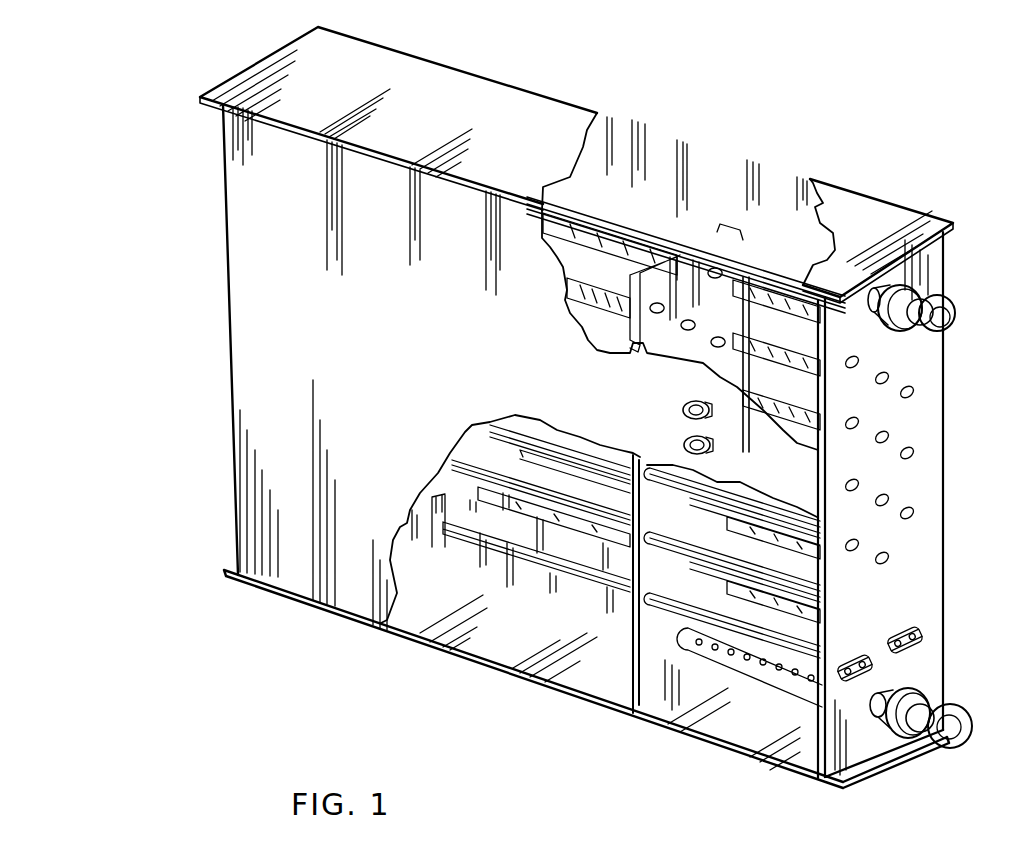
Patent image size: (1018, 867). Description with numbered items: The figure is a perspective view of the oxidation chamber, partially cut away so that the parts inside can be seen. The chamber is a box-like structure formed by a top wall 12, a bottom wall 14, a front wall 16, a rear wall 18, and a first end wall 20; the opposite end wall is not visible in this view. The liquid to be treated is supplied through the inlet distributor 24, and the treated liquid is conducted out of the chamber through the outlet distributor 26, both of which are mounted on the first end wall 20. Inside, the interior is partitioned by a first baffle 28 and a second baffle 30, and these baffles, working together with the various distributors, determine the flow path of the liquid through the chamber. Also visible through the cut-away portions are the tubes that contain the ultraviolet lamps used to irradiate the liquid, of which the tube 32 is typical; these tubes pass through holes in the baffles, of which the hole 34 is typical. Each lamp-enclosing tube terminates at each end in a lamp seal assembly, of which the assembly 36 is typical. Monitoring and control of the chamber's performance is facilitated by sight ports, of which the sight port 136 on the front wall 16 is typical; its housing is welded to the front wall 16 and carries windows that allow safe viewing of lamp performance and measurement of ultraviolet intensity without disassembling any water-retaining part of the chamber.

The top wall 12 is at (442, 87).
The bottom wall 14 is at (742, 724).
The front wall 16 is at (248, 393).
The rear wall 18 is at (770, 342).
The first end wall 20 is at (923, 537).
The inlet distributor 24 is at (962, 712).
The outlet distributor 26 is at (945, 298).
The first baffle 28 is at (657, 660).
The second baffle 30 is at (438, 508).
The tube 32 is at (543, 553).
The hole 34 is at (664, 297).
The lamp seal assembly 36 is at (928, 618).
The sight port 136 is at (711, 444).